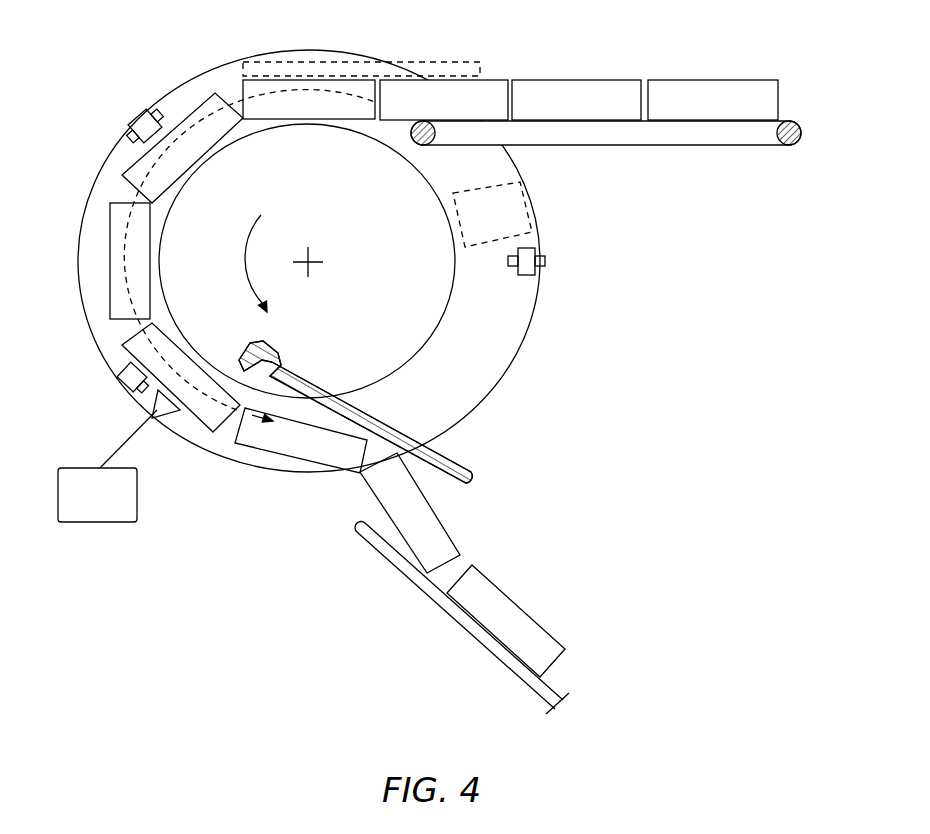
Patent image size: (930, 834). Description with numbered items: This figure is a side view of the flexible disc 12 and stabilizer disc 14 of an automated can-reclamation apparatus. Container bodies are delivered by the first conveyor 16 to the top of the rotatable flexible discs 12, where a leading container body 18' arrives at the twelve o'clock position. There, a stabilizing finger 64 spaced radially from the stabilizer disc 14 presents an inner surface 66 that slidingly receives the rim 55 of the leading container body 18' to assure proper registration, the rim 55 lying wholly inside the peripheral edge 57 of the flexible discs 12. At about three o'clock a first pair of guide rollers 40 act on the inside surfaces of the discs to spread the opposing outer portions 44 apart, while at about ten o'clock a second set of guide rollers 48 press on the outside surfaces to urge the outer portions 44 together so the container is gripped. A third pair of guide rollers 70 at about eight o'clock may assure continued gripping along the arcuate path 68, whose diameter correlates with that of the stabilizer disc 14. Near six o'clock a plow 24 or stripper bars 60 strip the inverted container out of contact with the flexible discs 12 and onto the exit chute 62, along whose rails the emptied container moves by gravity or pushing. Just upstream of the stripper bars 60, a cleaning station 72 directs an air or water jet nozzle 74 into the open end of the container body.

The flexible discs 12 is at (530, 290).
The stabilizer disc 14 is at (445, 290).
The first conveyor 16 is at (791, 121).
The leading container body 18' is at (249, 212).
The plow 24 is at (390, 417).
The first pair of guide rollers 40 is at (540, 252).
The opposing outer portions 44 is at (522, 197).
The second set of guide rollers 48 is at (140, 115).
The rim 55 is at (257, 80).
The peripheral edge 57 is at (115, 148).
The stripper bars 60 is at (443, 470).
The exit chute 62 is at (430, 596).
The stabilizing finger 64 is at (427, 65).
The inner surface 66 is at (360, 77).
The arcuate path 68 is at (118, 262).
The third pair of guide rollers 70 is at (117, 385).
The cleaning station 72 is at (150, 462).
The jet nozzle 74 is at (152, 408).